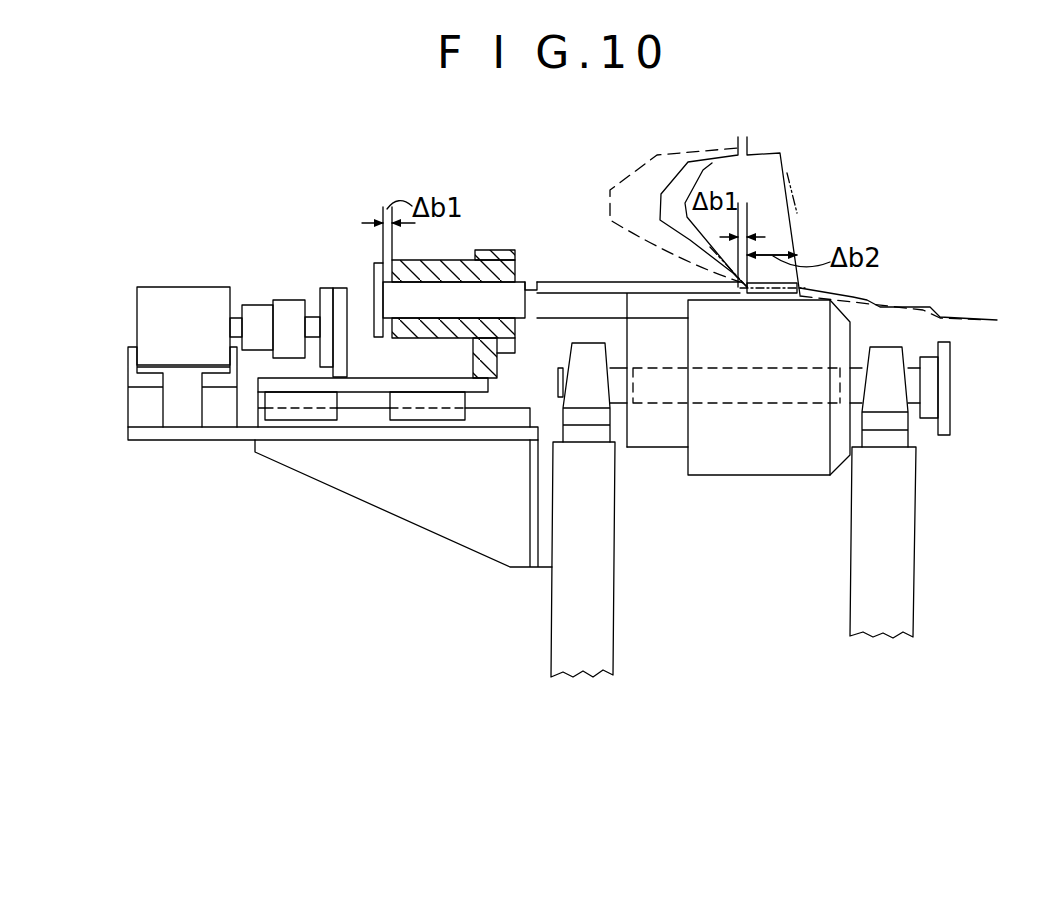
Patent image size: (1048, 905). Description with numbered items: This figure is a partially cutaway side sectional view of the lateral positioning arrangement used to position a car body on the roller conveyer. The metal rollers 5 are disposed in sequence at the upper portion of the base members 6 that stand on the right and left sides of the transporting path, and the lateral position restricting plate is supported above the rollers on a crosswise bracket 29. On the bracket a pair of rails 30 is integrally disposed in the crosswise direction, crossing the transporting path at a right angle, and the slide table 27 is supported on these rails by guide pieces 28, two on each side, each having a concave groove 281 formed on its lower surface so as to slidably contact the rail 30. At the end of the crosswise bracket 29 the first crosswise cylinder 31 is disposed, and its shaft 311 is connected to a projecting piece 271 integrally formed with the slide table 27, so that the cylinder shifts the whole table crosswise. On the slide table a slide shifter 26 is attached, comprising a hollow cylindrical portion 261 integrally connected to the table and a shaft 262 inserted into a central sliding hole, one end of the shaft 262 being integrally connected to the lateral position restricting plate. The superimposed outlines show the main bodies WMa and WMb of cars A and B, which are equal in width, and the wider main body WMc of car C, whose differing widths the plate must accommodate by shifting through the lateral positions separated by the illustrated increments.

The first crosswise cylinder 31 is at (170, 298).
The shaft 311 is at (313, 317).
The projecting piece 271 is at (340, 297).
The slide shifter 26 is at (453, 257).
The hollow cylindrical portion 261 is at (507, 270).
The shaft 262 is at (567, 303).
The slide table 27 is at (360, 379).
The guide piece 28 is at (325, 420).
The concave groove 281 is at (287, 408).
The rail 30 is at (363, 420).
The crosswise bracket 29 is at (208, 440).
The base member 6 is at (602, 552).
The metal roller 5 is at (773, 463).
The main body of car A WMa is at (783, 178).
The main body of car B WMb is at (800, 197).
The main body of car C WMc is at (752, 150).